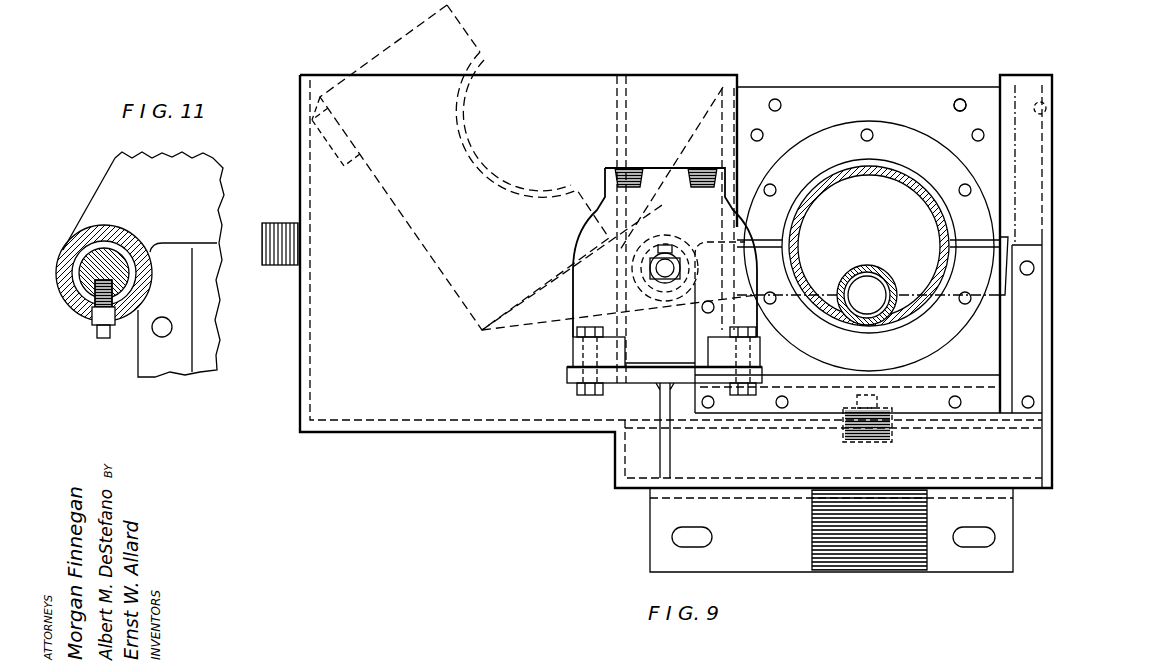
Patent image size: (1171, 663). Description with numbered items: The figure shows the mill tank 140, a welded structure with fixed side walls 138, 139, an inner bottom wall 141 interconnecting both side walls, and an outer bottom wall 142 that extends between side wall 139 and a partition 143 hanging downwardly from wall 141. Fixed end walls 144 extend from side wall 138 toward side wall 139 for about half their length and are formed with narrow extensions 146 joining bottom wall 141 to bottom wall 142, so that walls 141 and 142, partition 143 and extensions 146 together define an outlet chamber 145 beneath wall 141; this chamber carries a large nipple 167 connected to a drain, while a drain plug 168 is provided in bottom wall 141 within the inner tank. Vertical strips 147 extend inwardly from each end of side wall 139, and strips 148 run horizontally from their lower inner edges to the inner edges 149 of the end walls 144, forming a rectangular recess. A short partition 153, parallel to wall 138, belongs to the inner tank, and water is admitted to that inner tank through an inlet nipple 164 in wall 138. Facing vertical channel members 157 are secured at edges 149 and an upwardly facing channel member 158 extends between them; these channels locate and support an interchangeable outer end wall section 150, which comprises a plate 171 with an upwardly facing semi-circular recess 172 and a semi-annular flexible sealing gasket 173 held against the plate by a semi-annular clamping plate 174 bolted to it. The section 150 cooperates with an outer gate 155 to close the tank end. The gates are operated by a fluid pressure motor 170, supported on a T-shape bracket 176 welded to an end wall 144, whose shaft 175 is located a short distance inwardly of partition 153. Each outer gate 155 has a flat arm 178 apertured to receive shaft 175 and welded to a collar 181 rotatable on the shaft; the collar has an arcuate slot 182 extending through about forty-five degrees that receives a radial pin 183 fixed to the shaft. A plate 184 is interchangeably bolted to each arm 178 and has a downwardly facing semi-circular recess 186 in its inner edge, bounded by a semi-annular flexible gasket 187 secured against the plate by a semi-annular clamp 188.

In FIG. 9, the side wall 138 is at (298, 373).
In FIG. 9, the side wall 139 is at (1050, 109).
In FIG. 9, the mill tank 140 is at (1076, 285).
In FIG. 9, the inner bottom wall 141 is at (786, 433).
In FIG. 9, the outer bottom wall 142 is at (1005, 478).
In FIG. 9, the partition 143 is at (625, 457).
In FIG. 9, the end wall 144 is at (423, 400).
In FIG. 9, the outlet chamber 145 is at (648, 492).
In FIG. 9, the narrow extension 146 is at (1040, 458).
In FIG. 9, the vertical strip 147 is at (1027, 85).
In FIG. 9, the horizontal strip 148 is at (968, 388).
In FIG. 9, the inner edge 149 is at (740, 100).
In FIG. 9, the outer end wall section 150 is at (1006, 330).
In FIG. 9, the short partition 153 is at (628, 100).
In FIG. 9, the outer gate 155 is at (985, 167).
In FIG. 11, the vertical channel member 157 is at (180, 353).
In FIG. 9, the upwardly facing channel member 158 is at (832, 384).
In FIG. 9, the inlet nipple 164 is at (274, 223).
In FIG. 9, the nipple 167 is at (880, 553).
In FIG. 9, the drain plug 168 is at (870, 398).
In FIG. 9, the fluid pressure motor 170 is at (668, 343).
In FIG. 11, the plate 171 is at (210, 315).
In FIG. 9, the plate 171 is at (1000, 368).
In FIG. 9, the semi-circular recess 172 is at (842, 320).
In FIG. 9, the sealing gasket 173 is at (905, 320).
In FIG. 9, the clamping plate 174 is at (975, 258).
In FIG. 11, the shaft 175 is at (108, 257).
In FIG. 9, the shaft 175 is at (665, 268).
In FIG. 9, the T-shape bracket 176 is at (665, 398).
In FIG. 11, the flat arm 178 is at (190, 180).
In FIG. 11, the collar 181 is at (66, 247).
In FIG. 11, the arcuate slot 182 is at (132, 310).
In FIG. 11, the radial pin 183 is at (100, 315).
In FIG. 9, the plate 184 is at (958, 98).
In FIG. 9, the semi-circular recess 186 is at (890, 160).
In FIG. 9, the flexible gasket 187 is at (817, 175).
In FIG. 9, the clamp 188 is at (845, 133).